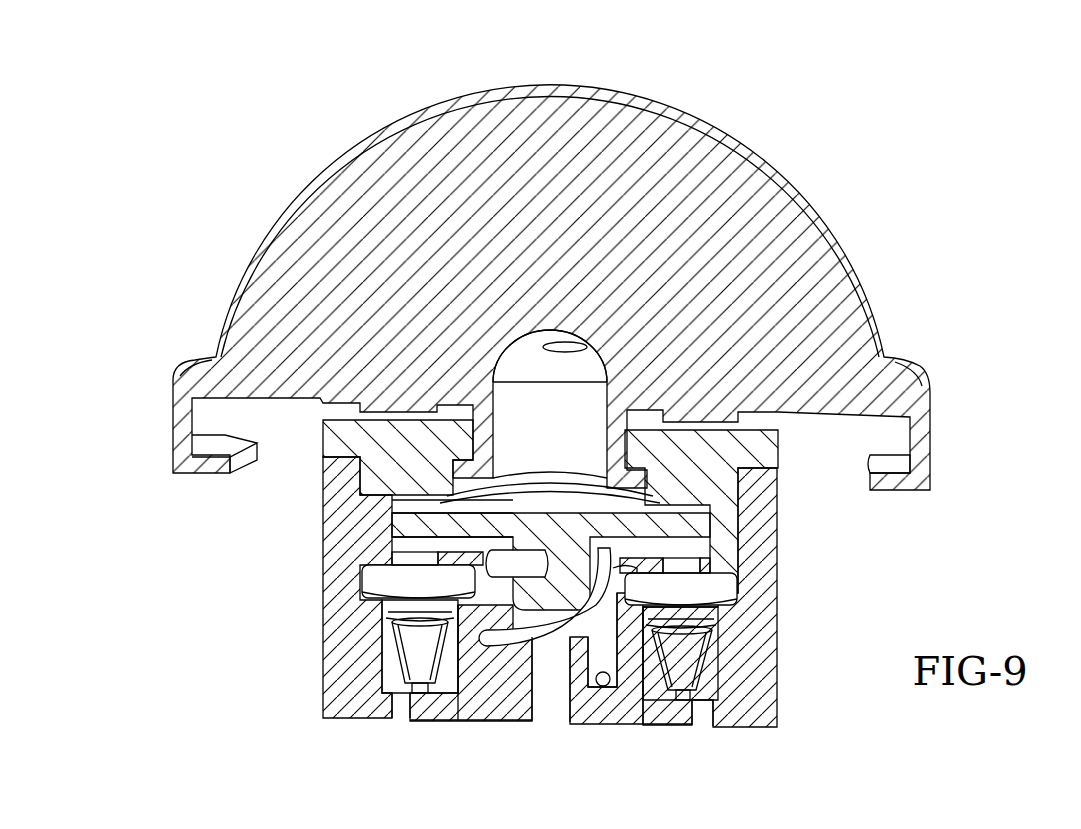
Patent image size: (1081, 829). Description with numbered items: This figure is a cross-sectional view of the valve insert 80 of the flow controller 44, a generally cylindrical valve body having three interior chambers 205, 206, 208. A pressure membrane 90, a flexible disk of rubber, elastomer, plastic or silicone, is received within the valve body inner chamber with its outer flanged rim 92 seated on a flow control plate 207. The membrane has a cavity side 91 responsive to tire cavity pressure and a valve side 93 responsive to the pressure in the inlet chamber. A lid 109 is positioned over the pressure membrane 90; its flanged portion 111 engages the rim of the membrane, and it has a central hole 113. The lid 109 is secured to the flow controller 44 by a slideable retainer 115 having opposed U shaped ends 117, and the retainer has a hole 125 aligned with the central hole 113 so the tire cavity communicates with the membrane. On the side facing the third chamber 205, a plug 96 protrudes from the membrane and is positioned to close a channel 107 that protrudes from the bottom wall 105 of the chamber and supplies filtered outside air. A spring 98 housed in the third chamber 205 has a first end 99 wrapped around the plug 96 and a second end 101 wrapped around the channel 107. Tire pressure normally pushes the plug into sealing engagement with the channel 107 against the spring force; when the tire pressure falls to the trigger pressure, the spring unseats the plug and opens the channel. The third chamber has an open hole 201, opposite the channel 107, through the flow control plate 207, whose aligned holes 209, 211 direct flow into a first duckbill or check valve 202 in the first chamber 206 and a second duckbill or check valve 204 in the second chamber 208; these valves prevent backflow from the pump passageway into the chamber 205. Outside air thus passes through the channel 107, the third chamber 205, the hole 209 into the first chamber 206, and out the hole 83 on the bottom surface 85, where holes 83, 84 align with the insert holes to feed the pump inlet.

The flow controller 44 is at (168, 195).
The slideable retainer 115 is at (757, 200).
The hole 125 is at (582, 415).
The flanged portion 111 is at (337, 437).
The U shaped ends 117 is at (203, 420).
The lid 109 is at (700, 470).
The first end 99 is at (533, 560).
The central hole 113 is at (455, 488).
The open hole 201 is at (607, 558).
The cavity side 91 is at (410, 500).
The outer flanged rim 92 is at (410, 515).
The valve side 93 is at (390, 548).
The pressure membrane 90 is at (700, 530).
The hole 211 is at (683, 560).
The hole 209 is at (410, 558).
The flow control plate 207 is at (718, 568).
The valve insert 80 is at (345, 625).
The second duckbill or check valve 204 is at (687, 652).
The first duckbill or check valve 202 is at (410, 648).
The first chamber 206 is at (392, 673).
The second chamber 208 is at (707, 680).
The hole 83 is at (400, 708).
The spring 98 is at (467, 640).
The plug 96 is at (560, 588).
The second end 101 is at (602, 640).
The third chamber 205 is at (604, 686).
The bottom wall 105 is at (478, 710).
The channel 107 is at (555, 697).
The bottom surface 85 is at (662, 728).
The hole 84 is at (693, 712).